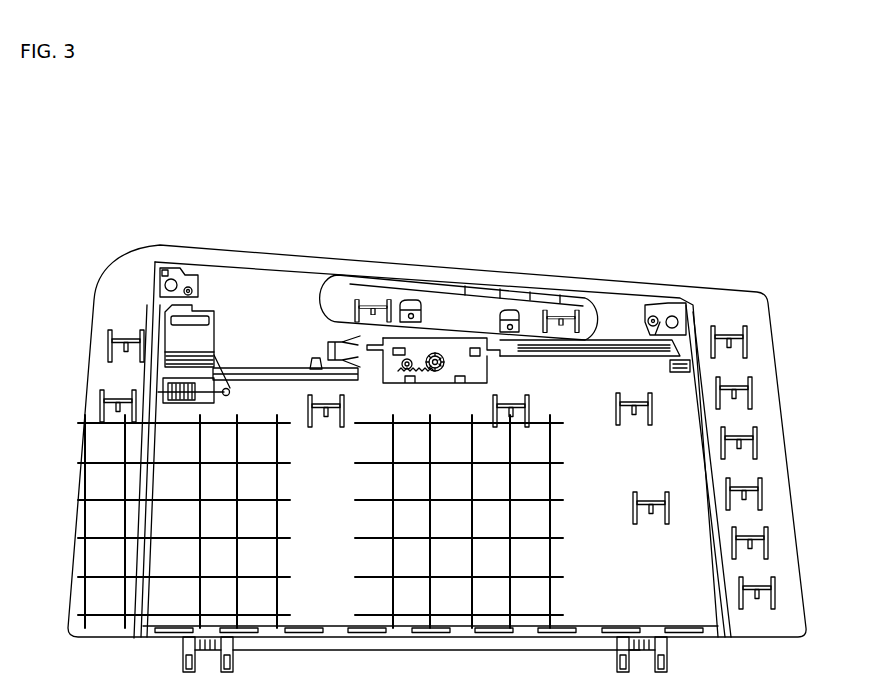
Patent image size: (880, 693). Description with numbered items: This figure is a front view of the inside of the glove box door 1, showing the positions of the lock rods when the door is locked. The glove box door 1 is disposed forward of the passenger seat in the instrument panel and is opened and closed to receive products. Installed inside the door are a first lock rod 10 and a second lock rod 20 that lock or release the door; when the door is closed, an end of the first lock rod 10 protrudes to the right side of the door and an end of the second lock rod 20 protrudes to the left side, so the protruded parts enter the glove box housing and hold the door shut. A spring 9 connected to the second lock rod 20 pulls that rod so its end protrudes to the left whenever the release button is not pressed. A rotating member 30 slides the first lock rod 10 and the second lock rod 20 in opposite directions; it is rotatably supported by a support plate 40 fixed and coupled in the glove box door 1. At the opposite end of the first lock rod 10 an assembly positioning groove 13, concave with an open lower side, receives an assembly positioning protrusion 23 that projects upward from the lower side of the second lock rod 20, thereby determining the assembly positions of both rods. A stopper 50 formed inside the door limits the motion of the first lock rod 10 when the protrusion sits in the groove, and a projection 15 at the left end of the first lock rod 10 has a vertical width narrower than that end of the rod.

The glove box door 1 is at (437, 458).
The spring 9 is at (170, 395).
The first lock rod 10 is at (580, 347).
The assembly positioning groove 13 is at (392, 350).
The projection 15 is at (395, 353).
The second lock rod 20 is at (242, 377).
The assembly positioning protrusion 23 is at (307, 350).
The rotating member 30 is at (427, 353).
The support plate 40 is at (453, 333).
The stopper 50 is at (328, 325).